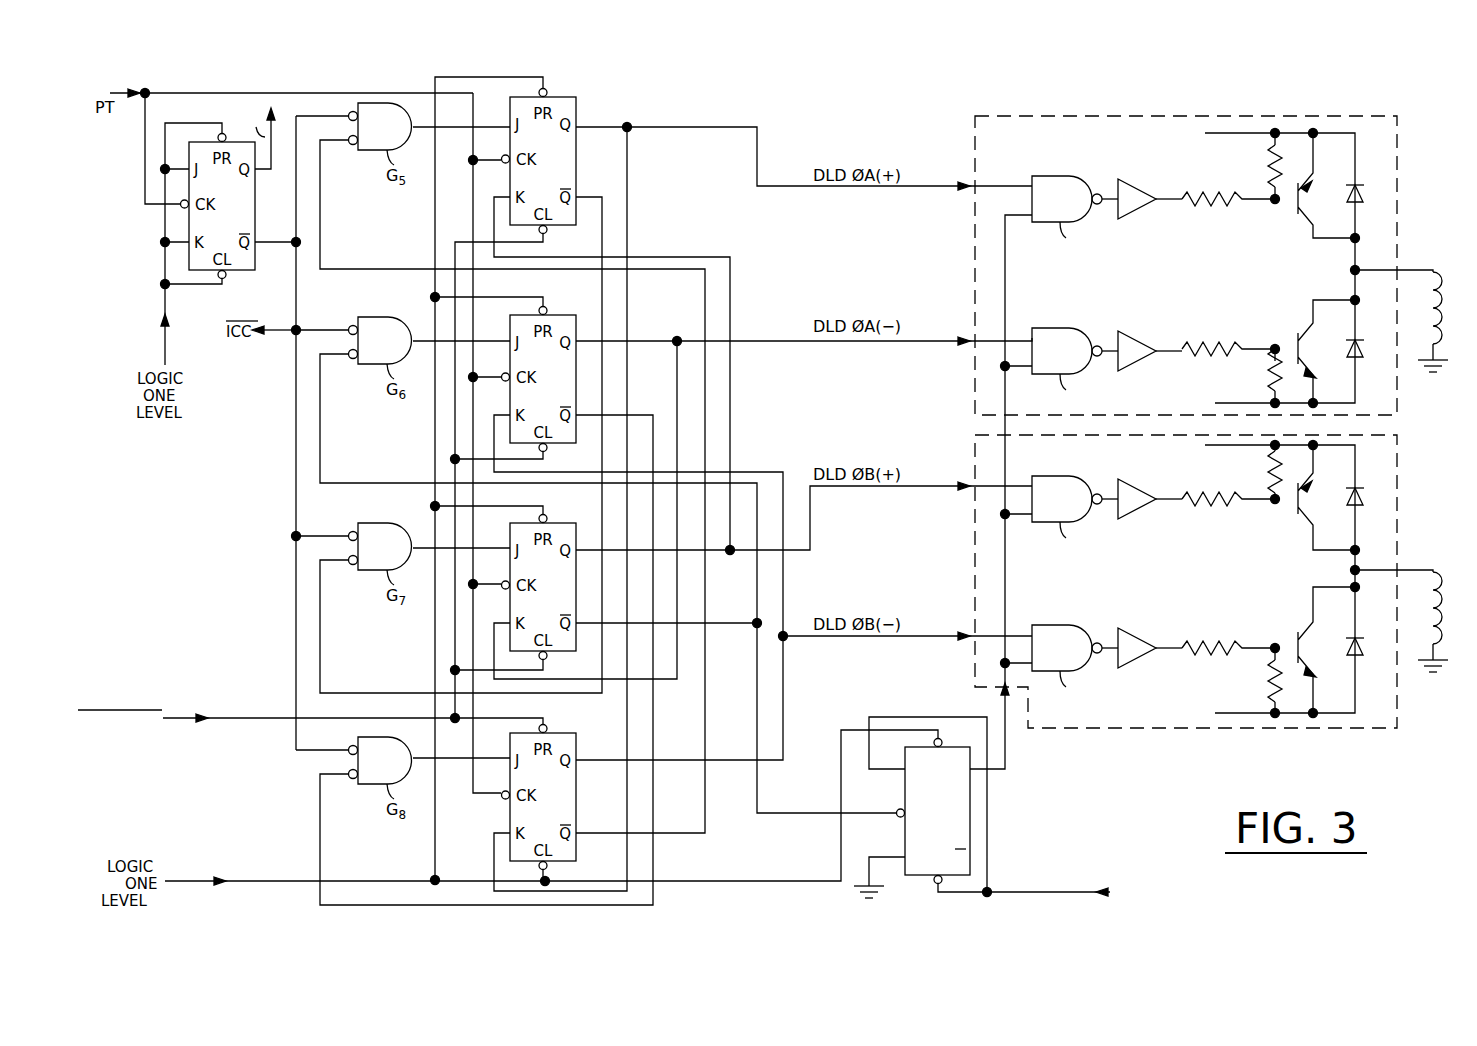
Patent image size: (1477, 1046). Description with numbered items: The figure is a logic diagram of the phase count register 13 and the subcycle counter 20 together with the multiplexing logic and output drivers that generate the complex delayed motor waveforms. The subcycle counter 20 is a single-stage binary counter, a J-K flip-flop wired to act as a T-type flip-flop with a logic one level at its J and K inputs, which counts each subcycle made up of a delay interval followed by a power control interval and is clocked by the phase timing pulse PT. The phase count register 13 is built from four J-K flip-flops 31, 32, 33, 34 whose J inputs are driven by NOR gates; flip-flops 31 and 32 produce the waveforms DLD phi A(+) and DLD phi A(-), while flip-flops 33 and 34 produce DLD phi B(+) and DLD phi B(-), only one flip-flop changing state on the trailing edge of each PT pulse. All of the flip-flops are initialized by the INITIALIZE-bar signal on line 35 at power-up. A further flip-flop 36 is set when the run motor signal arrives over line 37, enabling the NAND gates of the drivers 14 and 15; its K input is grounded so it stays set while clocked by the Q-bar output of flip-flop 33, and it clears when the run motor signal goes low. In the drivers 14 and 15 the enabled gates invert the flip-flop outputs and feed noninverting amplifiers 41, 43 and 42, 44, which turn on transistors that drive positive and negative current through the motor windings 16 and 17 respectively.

The phase count register 13 is at (578, 72).
The driver 14 is at (1068, 118).
The driver 15 is at (1218, 730).
The motor winding 16 is at (1443, 312).
The motor winding 17 is at (1443, 612).
The subcycle counter 20 is at (238, 270).
The J-K flip-flop 31 is at (576, 150).
The J-K flip-flop 32 is at (555, 448).
The J-K flip-flop 33 is at (570, 655).
The J-K flip-flop 34 is at (576, 765).
The line 35 is at (266, 722).
The flip-flop 36 is at (905, 775).
The line 37 is at (1020, 892).
The noninverting amplifier 41 is at (1138, 208).
The noninverting amplifier 42 is at (1138, 508).
The noninverting amplifier 43 is at (1140, 345).
The noninverting amplifier 44 is at (1137, 644).